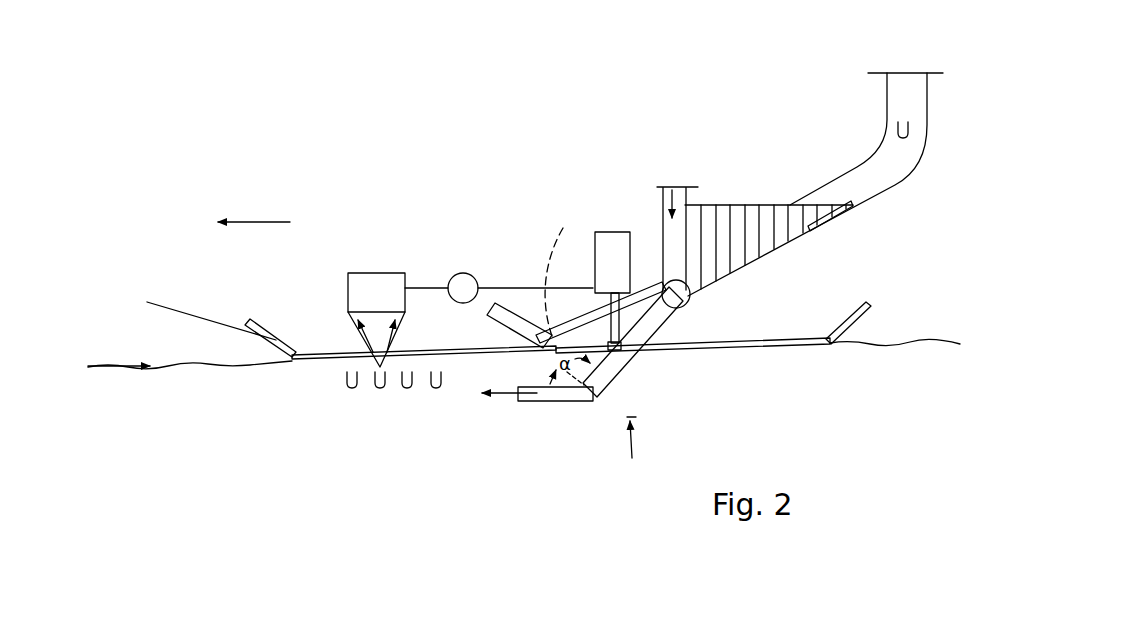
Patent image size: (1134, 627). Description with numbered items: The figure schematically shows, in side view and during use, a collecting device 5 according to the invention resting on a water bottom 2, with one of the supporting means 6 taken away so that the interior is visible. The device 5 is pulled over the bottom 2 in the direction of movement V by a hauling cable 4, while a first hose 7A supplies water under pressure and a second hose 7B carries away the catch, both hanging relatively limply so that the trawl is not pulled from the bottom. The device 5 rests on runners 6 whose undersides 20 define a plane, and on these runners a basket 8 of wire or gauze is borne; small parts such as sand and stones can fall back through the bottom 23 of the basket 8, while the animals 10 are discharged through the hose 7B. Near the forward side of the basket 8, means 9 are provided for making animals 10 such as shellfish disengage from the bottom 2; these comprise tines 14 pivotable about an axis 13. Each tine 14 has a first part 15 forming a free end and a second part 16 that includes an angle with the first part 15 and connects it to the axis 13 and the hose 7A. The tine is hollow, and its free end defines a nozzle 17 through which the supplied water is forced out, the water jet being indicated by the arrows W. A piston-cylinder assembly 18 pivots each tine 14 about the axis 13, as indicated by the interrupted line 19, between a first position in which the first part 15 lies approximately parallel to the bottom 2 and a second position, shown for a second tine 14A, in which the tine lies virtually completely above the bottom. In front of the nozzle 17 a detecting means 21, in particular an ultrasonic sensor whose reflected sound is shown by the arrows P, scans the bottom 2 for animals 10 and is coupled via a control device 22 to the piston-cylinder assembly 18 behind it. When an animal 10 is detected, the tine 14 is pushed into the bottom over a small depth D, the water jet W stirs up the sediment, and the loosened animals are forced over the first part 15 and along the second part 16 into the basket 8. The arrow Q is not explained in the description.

The water bottom 2 is at (933, 338).
The hauling cable 4 is at (194, 311).
The collecting device 5 is at (408, 217).
The supporting means 6 is at (868, 317).
The first hose 7A is at (660, 198).
The second hose 7B is at (905, 88).
The basket 8 is at (745, 215).
The means for having animals disengage 9 is at (642, 374).
The animals 10 is at (381, 390).
The axis 13 is at (692, 312).
The tine 14 is at (579, 406).
The second tine 14A is at (512, 310).
The first part 15 is at (552, 392).
The second part 16 is at (640, 357).
The nozzle 17 is at (528, 404).
The piston-cylinder assembly 18 is at (600, 232).
The interrupted line 19 is at (627, 410).
The undersides of the runners 20 is at (305, 372).
The detecting means 21 is at (372, 273).
The control device 22 is at (464, 273).
The bottom of the basket 23 is at (786, 257).
The feed direction Q is at (110, 364).
The direction of movement V is at (265, 222).
The water jet W is at (677, 173).
The reflected sound P is at (357, 342).
The depth D is at (633, 449).